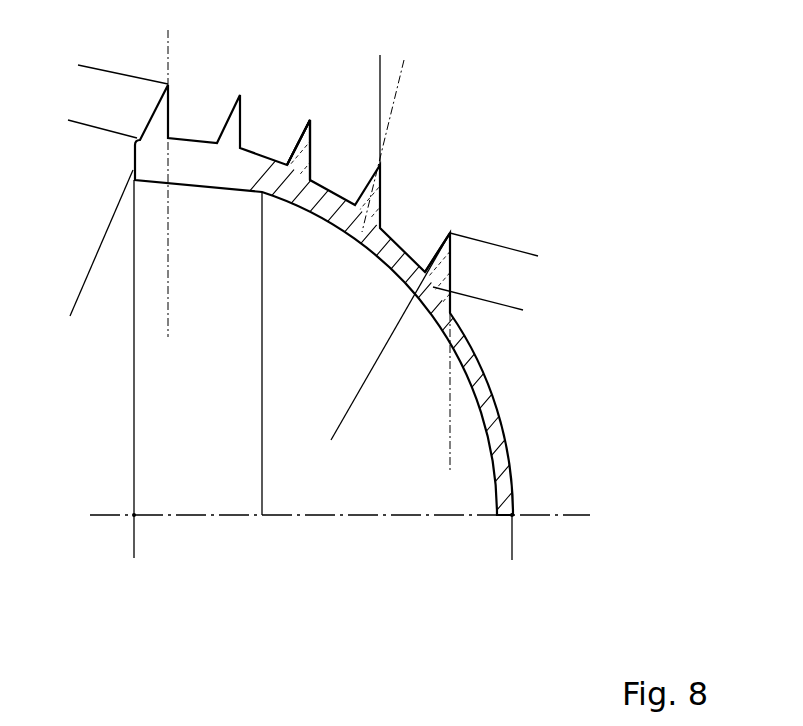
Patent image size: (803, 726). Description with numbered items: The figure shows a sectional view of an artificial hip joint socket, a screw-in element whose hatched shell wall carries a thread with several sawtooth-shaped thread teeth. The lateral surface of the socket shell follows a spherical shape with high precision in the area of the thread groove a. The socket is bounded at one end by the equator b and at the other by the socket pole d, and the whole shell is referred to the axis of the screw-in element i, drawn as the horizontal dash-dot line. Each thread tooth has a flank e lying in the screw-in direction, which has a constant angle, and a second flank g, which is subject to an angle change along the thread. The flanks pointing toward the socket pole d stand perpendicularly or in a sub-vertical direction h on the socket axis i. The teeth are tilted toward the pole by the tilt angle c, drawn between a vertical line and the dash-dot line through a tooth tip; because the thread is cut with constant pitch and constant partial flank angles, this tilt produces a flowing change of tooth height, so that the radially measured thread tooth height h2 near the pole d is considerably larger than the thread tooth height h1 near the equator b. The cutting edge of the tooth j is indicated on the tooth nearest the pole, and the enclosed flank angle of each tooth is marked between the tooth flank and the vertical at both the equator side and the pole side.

The thread groove a is at (193, 142).
The equator b is at (133, 391).
The tilt angle c is at (442, 88).
The socket pole d is at (512, 558).
The flank of the thread tooth lying in the screw-in direction e is at (312, 152).
The second flank of the thread tooth g is at (295, 148).
The sub-vertical direction h is at (425, 274).
The thread tooth height in proximity to the equator h1 is at (97, 30).
The thread tooth height in proximity to the pole h2 is at (538, 212).
The axis of the screw-in element i is at (325, 513).
The cutting edge of the tooth j is at (440, 252).